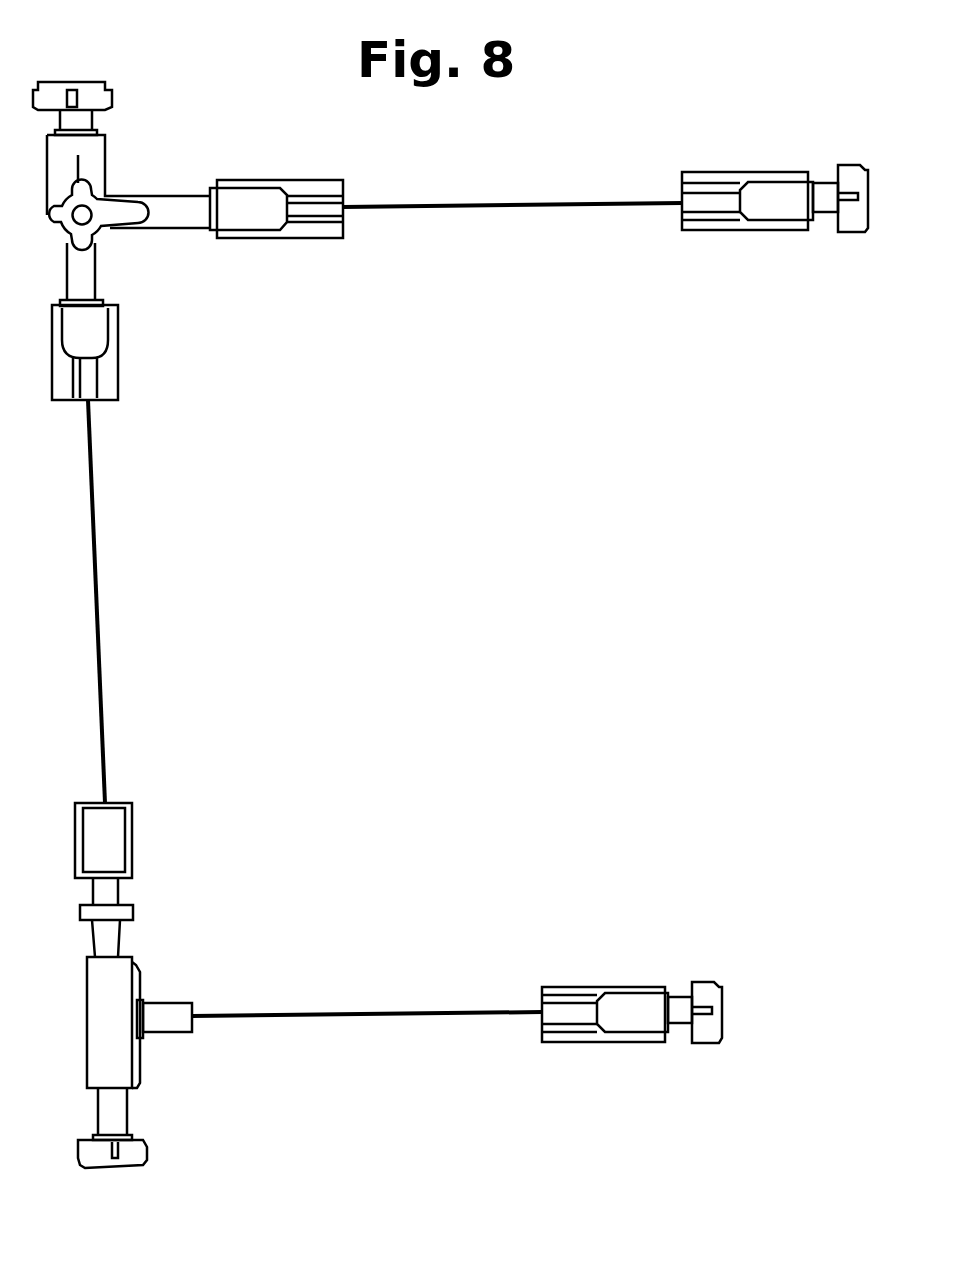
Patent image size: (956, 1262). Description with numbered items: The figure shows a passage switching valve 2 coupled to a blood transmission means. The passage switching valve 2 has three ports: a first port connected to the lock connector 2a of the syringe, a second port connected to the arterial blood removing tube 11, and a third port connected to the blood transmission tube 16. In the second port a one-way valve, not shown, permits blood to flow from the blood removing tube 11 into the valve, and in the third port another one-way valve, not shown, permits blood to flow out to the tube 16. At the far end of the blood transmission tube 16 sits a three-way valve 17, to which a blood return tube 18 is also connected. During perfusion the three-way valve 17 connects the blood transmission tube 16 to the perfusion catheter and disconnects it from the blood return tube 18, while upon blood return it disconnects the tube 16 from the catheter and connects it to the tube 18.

The three-way valve 17 is at (107, 195).
The blood return tube 18 is at (490, 207).
The blood transmission tube 16 is at (100, 617).
The passage switching valve 2 is at (137, 983).
The lock connector 2a is at (147, 1147).
The arterial blood removing tube 11 is at (432, 1012).